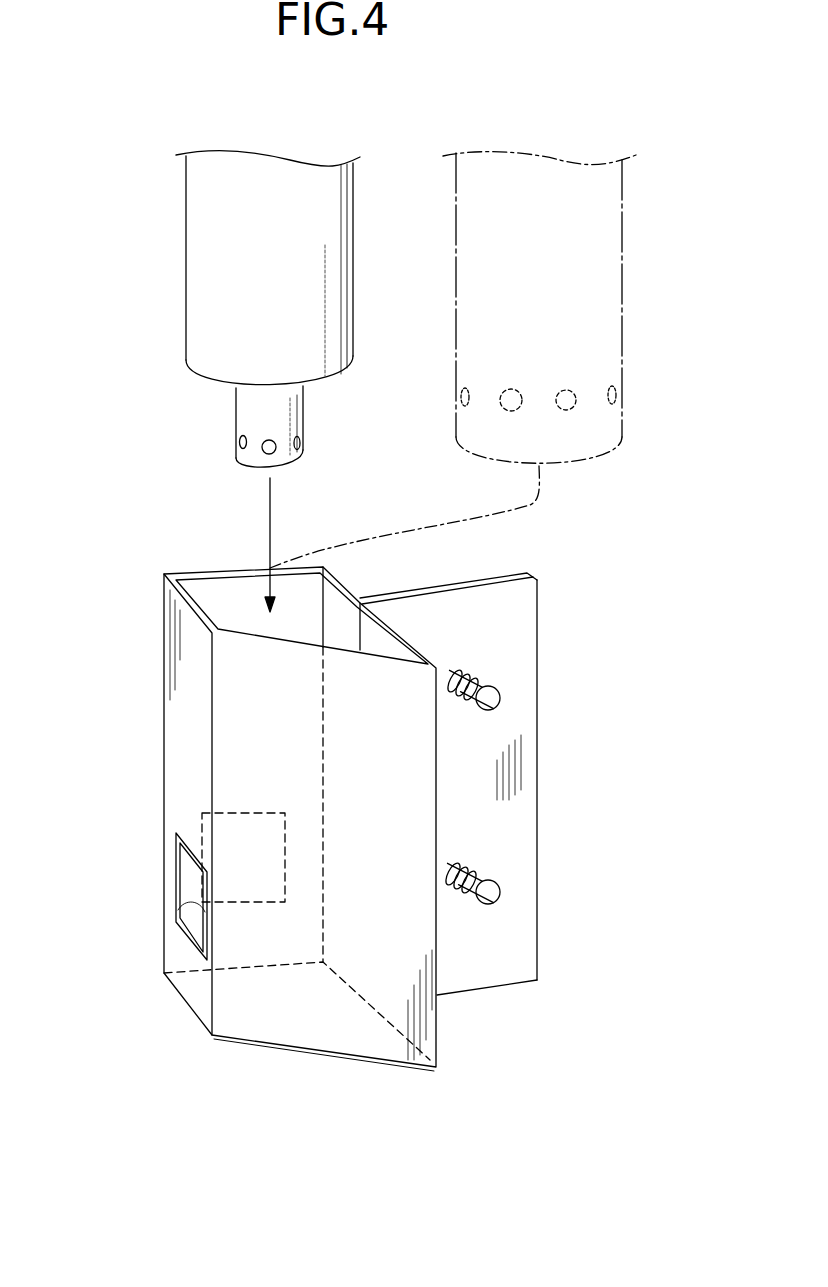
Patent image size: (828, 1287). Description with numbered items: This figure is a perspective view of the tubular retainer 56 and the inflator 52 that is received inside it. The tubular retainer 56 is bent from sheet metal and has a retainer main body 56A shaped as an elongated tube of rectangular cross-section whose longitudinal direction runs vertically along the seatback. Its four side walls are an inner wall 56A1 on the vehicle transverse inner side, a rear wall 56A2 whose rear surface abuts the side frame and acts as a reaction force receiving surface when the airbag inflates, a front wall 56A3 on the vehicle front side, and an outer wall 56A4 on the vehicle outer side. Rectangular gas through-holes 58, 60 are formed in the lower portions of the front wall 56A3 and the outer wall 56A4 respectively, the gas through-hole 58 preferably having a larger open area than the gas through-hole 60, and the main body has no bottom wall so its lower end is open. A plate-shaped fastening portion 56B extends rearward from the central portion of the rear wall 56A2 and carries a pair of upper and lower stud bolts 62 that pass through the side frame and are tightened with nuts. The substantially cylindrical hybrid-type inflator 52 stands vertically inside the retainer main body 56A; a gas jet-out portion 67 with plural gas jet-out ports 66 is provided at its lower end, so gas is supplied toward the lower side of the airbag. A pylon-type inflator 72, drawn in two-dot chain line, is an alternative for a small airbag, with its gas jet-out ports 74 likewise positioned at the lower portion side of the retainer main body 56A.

The inflator 52 is at (185, 254).
The gas jet-out portion 67 is at (236, 405).
The gas jet-out ports 66 is at (262, 455).
The pylon-type inflator 72 is at (622, 285).
The gas jet-out ports 74 is at (566, 407).
The tubular retainer 56 is at (328, 819).
The retainer main body 56A is at (290, 819).
The inner wall 56A1 is at (290, 937).
The rear wall 56A2 is at (385, 618).
The front wall 56A3 is at (187, 805).
The outer wall 56A4 is at (208, 572).
The fastening portion 56B is at (517, 717).
The gas through-hole 58 is at (177, 923).
The gas through-hole 60 is at (262, 822).
The stud bolts 62 is at (480, 676).